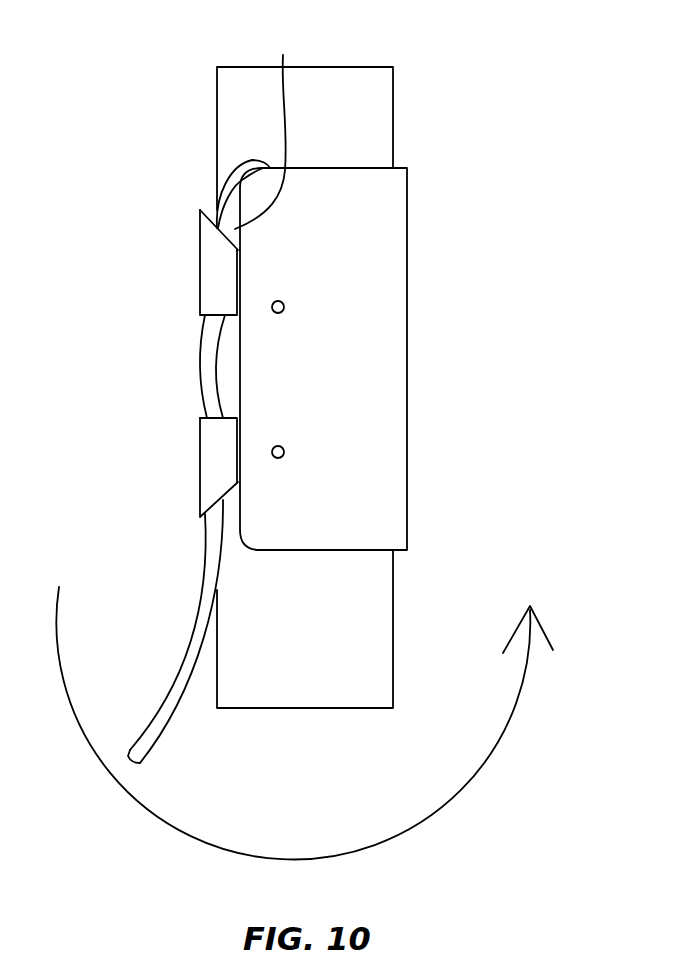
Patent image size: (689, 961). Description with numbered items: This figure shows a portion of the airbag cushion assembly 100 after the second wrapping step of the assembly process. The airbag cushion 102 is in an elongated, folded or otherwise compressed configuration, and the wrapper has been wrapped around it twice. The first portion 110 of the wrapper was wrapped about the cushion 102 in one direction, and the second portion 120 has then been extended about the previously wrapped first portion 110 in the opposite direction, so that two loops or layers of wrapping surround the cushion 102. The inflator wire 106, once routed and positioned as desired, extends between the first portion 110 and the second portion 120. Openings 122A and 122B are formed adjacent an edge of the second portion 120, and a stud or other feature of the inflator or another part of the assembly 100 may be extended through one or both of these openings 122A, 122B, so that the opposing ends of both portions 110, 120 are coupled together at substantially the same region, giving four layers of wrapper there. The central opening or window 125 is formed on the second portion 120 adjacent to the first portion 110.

The airbag cushion assembly 100 is at (447, 55).
The airbag cushion 102 is at (370, 603).
The inflator wire 106 is at (200, 388).
The first portion of wrapper 110 is at (267, 132).
The second portion of wrapper 120 is at (398, 358).
The opening 122A is at (282, 312).
The opening 122B is at (285, 450).
The central opening or window 125 is at (198, 322).